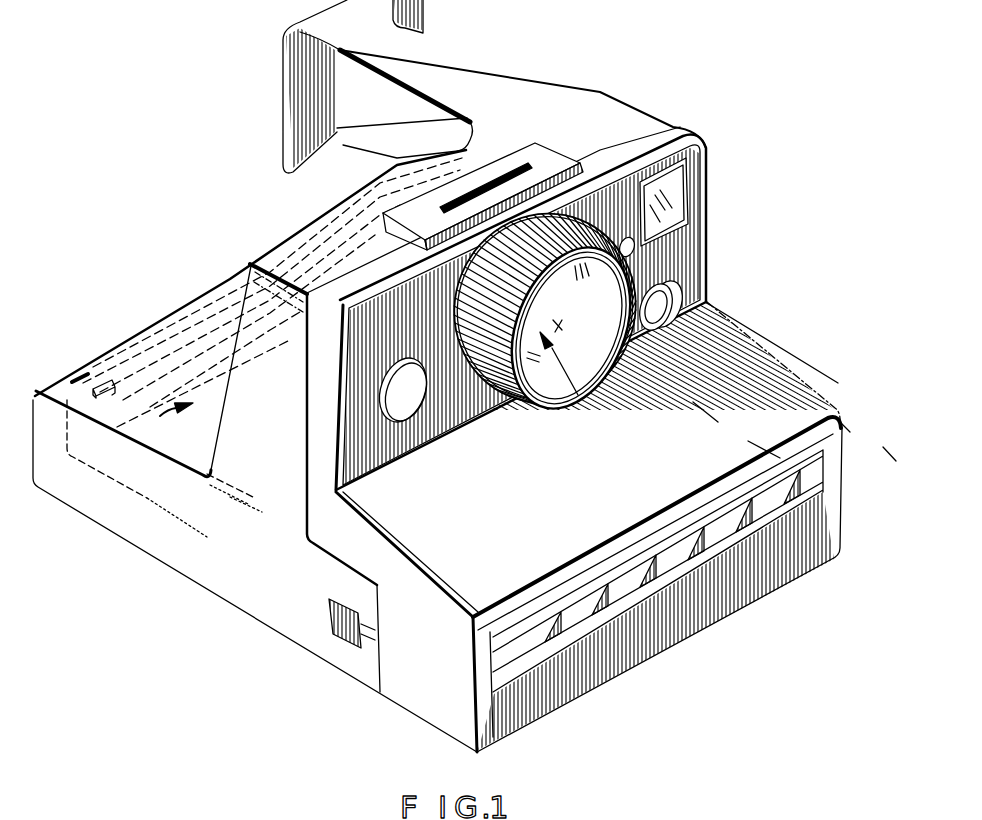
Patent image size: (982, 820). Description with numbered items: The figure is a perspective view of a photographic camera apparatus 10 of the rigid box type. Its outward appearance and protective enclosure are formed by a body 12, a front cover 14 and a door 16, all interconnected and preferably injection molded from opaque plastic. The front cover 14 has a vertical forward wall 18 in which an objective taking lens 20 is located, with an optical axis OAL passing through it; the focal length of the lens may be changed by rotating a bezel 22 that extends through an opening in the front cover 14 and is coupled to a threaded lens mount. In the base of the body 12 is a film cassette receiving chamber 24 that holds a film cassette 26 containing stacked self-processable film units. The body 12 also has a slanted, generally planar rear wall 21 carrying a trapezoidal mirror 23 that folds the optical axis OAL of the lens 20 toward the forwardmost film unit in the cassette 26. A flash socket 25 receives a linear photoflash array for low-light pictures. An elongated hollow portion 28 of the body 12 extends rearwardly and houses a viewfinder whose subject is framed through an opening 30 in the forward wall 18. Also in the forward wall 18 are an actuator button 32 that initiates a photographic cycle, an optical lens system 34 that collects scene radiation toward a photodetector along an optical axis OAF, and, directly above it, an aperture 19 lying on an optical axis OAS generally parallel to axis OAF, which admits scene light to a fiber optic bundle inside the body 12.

The photographic camera apparatus 10 is at (652, 104).
The body 12 is at (193, 580).
The front cover 14 is at (759, 334).
The door 16 is at (657, 662).
The vertical forward wall 18 is at (707, 252).
The aperture 19 is at (631, 250).
The objective taking lens 20 is at (540, 332).
The rear wall 21 is at (240, 270).
The bezel 22 is at (564, 262).
The mirror 23 is at (165, 318).
The film cassette receiving chamber 24 is at (132, 438).
The flash socket 25 is at (547, 151).
The film cassette 26 is at (149, 498).
The elongated hollow portion 28 is at (518, 70).
The opening 30 is at (690, 212).
The actuator button 32 is at (404, 410).
The optical lens system 34 is at (672, 299).
The optical axis of the aperture OAS is at (792, 351).
The optical axis of the objective taking lens OAL is at (736, 430).
The optical axis of the optical lens system OAF is at (867, 440).